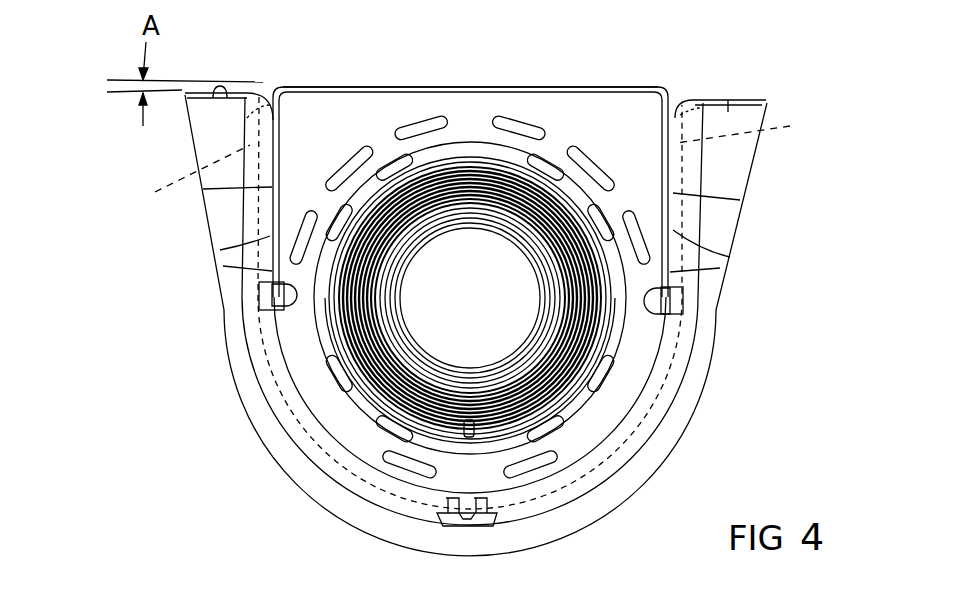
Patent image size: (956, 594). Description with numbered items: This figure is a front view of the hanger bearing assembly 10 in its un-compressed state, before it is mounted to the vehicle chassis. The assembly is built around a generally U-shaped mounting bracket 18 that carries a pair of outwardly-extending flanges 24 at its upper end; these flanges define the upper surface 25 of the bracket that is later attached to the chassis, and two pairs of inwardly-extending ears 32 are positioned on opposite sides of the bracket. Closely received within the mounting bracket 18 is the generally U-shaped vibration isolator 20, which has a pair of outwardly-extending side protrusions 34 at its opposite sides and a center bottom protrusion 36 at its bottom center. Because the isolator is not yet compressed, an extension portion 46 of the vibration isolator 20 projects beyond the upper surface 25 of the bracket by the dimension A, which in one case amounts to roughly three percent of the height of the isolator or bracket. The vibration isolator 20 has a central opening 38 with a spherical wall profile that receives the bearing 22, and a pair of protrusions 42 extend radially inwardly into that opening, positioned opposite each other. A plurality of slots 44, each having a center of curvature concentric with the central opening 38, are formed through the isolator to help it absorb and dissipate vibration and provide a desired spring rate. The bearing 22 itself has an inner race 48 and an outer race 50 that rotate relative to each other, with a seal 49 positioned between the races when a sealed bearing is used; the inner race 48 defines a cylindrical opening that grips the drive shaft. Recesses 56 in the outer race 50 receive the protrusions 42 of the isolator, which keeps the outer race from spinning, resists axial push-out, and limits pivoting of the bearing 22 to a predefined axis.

The bearing assembly 10 is at (187, 472).
The mounting bracket 18 is at (732, 172).
The vibration isolator 20 is at (650, 113).
The bearing 22 is at (373, 335).
The outwardly-extending flanges 24 is at (222, 95).
The upper surface 25 is at (230, 110).
The ears 32 is at (287, 300).
The side protrusions 34 is at (471, 160).
The center bottom protrusion 36 is at (470, 525).
The central opening 38 is at (522, 176).
The protrusions 42 is at (333, 290).
The slots 44 is at (392, 165).
The extension portion 46 is at (307, 87).
The inner race 48 is at (415, 342).
The seal 49 is at (530, 390).
The outer race 50 is at (392, 373).
The recesses 56 is at (310, 278).